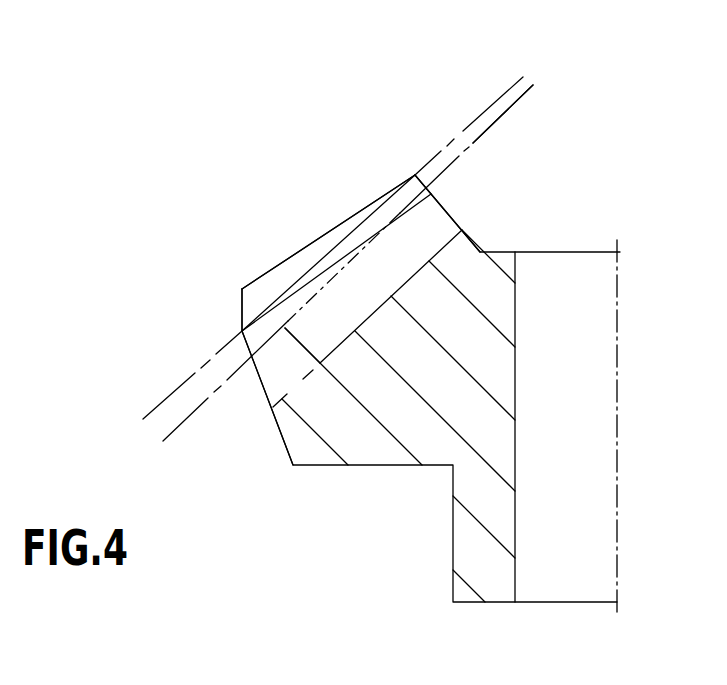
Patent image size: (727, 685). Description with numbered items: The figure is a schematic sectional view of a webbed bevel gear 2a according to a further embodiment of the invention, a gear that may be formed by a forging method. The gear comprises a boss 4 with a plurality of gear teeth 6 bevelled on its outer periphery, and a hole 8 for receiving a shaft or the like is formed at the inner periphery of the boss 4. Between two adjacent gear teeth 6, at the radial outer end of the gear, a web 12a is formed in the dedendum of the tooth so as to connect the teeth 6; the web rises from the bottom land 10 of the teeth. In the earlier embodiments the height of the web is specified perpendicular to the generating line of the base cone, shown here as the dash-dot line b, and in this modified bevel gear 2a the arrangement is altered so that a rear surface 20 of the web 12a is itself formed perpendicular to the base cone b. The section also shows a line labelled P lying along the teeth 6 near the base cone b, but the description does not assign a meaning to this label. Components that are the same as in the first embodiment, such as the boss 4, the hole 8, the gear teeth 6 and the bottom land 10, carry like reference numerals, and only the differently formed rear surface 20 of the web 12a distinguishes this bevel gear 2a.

The bevel gear 2a is at (408, 508).
The boss 4 is at (497, 382).
The hole 8 is at (515, 540).
The bottom land 10 is at (423, 260).
The gear teeth 6 is at (334, 258).
The web 12a is at (272, 358).
The rear surface 20 is at (298, 337).
The sheet material P is at (494, 103).
The base cone b is at (490, 127).